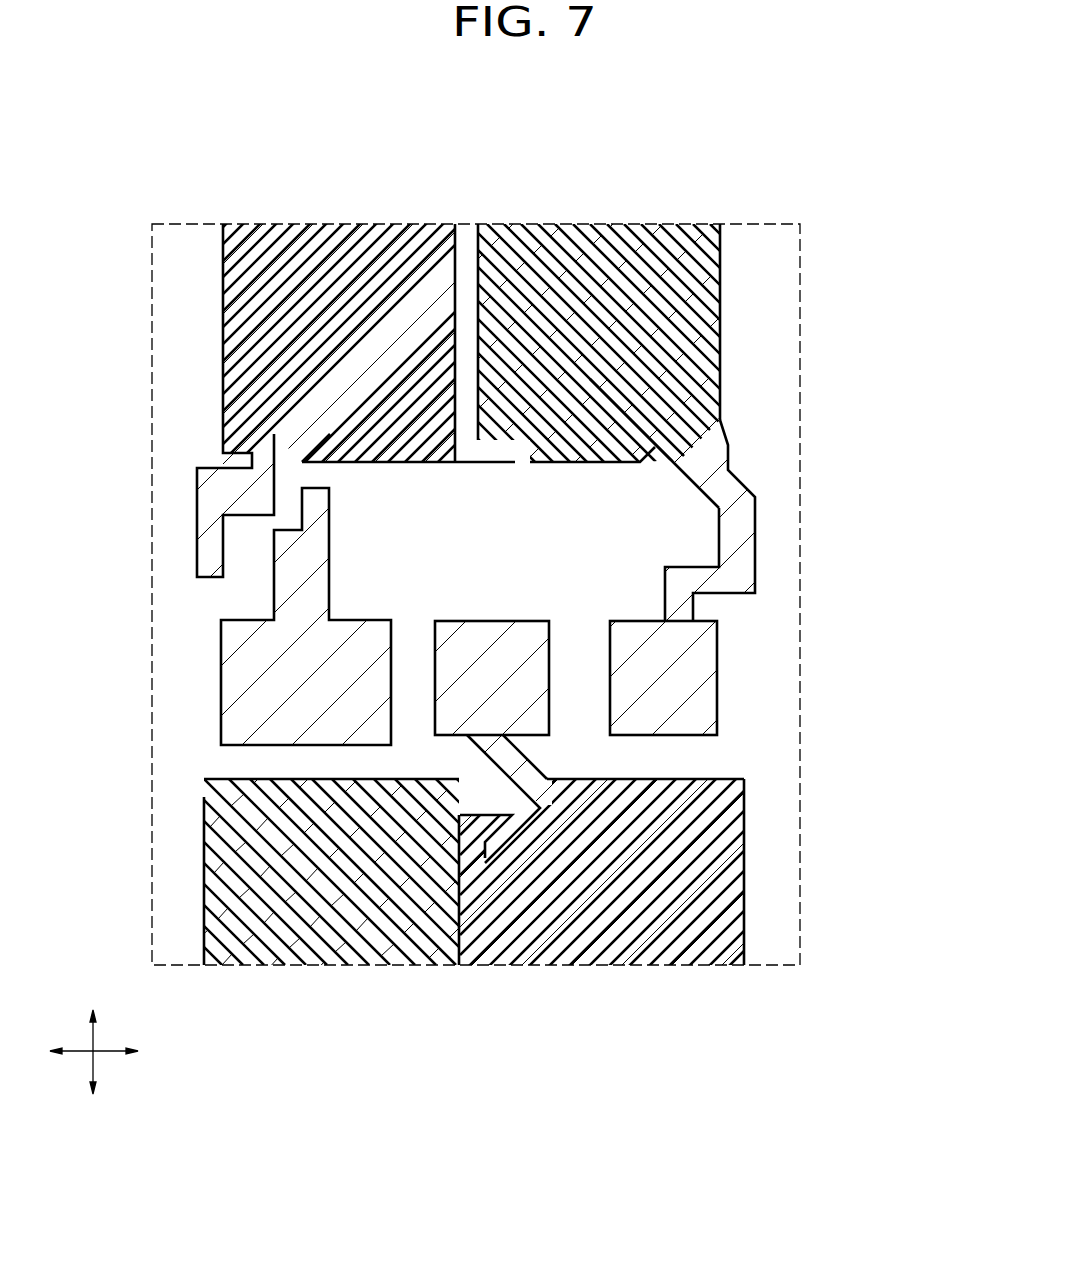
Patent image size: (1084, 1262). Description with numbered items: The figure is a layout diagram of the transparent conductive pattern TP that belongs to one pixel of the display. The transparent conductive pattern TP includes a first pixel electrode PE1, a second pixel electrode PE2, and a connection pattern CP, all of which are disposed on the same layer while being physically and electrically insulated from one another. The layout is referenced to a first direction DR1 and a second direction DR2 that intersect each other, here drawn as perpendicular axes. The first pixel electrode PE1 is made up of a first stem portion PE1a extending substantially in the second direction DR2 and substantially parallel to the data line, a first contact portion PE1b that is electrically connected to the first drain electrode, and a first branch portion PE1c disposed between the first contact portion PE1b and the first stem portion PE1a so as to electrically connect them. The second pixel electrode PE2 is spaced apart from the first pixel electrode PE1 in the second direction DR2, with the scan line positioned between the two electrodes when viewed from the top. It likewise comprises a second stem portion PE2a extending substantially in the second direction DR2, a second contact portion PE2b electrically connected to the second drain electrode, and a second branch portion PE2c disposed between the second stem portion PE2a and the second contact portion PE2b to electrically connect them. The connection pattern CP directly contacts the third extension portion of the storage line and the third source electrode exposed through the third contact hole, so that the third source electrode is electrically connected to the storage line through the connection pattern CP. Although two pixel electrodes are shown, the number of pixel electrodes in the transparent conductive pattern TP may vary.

The transparent conductive pattern TP is at (818, 205).
The first pixel electrode PE1 is at (572, 367).
The first stem portion PE1a is at (465, 283).
The first contact portion PE1b is at (743, 557).
The first branch portion PE1c is at (653, 377).
The second pixel electrode PE2 is at (492, 883).
The second stem portion PE2a is at (477, 925).
The second contact portion PE2b is at (549, 697).
The second branch portion PE2c is at (552, 858).
The connection pattern CP is at (221, 638).
The first direction DR1 is at (113, 1052).
The second direction DR2 is at (92, 1068).